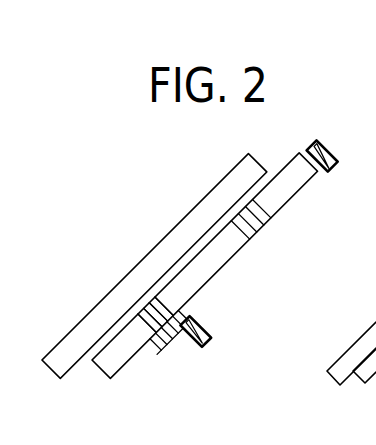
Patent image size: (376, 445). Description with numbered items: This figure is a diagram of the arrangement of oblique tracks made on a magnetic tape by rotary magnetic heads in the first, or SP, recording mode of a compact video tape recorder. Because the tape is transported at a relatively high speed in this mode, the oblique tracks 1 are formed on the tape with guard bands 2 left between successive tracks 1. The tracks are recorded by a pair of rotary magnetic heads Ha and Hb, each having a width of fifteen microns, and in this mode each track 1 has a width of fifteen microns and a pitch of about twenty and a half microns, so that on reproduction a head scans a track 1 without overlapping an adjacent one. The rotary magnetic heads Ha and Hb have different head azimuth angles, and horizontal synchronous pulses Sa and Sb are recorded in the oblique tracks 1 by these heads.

The oblique tracks 1 is at (203, 262).
The guard bands 2 is at (167, 284).
The horizontal synchronous pulses Sa is at (176, 350).
The horizontal synchronous pulses Sb is at (153, 320).
The rotary magnetic head Ha is at (212, 341).
The rotary magnetic head Hb is at (322, 145).